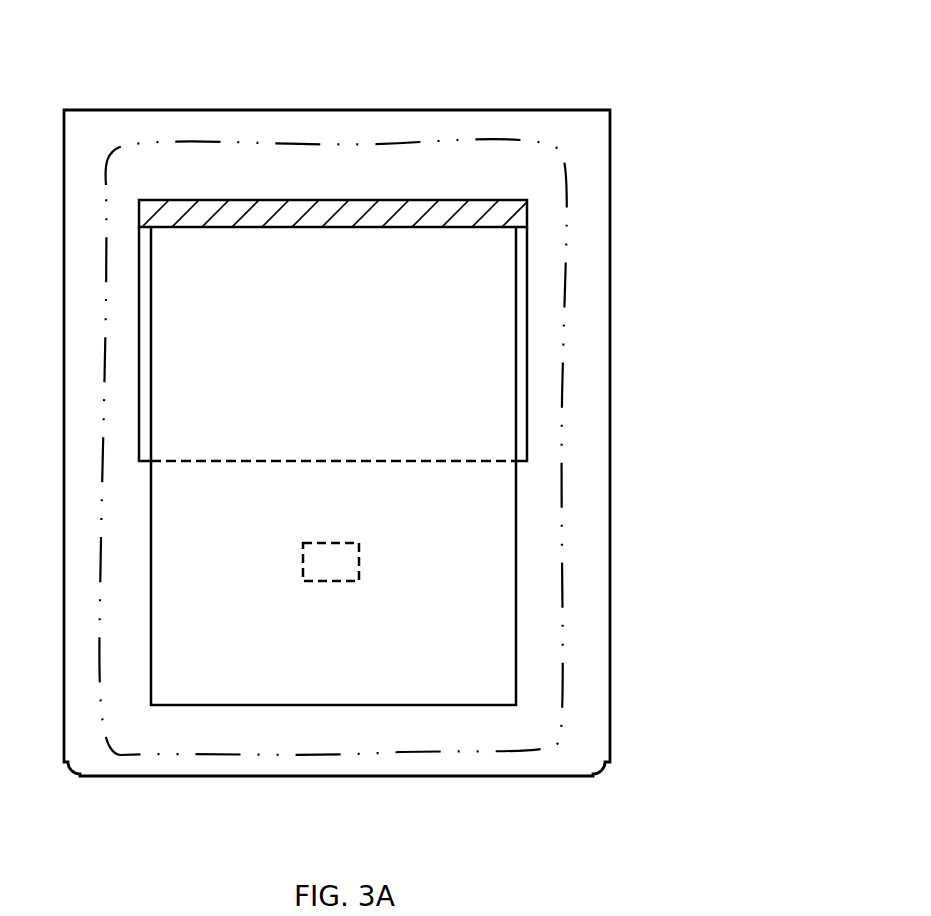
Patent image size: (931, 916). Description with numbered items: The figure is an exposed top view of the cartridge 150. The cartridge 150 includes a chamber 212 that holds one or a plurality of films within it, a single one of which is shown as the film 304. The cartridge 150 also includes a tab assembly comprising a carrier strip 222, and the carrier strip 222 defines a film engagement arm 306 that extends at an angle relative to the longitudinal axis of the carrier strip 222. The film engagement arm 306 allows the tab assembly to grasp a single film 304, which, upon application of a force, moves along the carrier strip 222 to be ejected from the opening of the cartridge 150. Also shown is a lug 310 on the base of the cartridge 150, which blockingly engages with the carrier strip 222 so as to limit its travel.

The cartridge 150 is at (525, 110).
The chamber 212 is at (580, 165).
The film engagement arm 306 is at (497, 213).
The carrier strip 222 is at (527, 410).
The film 304 is at (488, 523).
The lug 310 is at (359, 569).